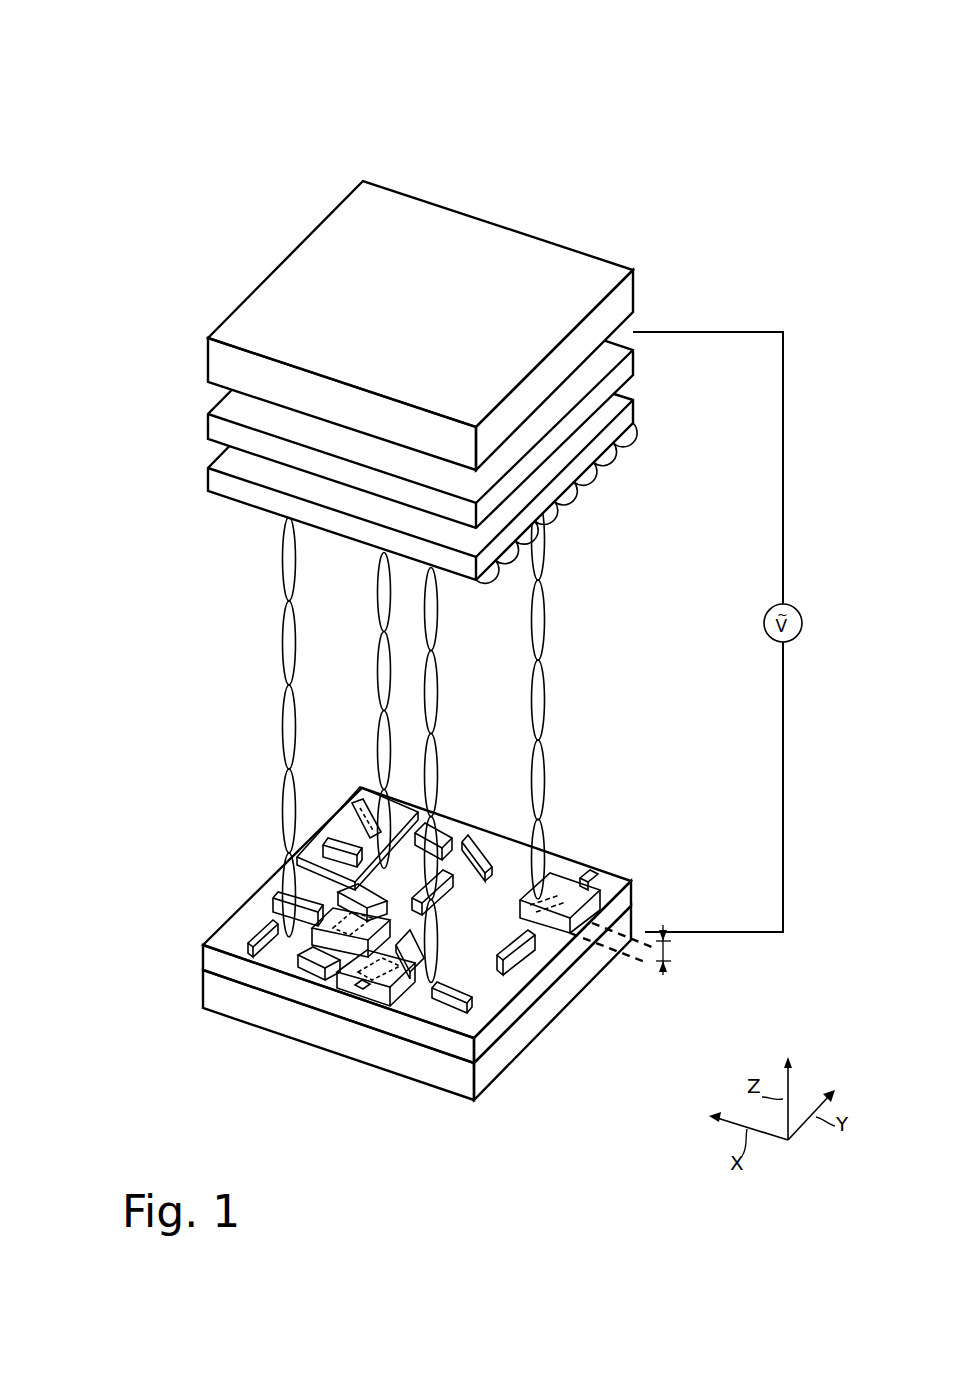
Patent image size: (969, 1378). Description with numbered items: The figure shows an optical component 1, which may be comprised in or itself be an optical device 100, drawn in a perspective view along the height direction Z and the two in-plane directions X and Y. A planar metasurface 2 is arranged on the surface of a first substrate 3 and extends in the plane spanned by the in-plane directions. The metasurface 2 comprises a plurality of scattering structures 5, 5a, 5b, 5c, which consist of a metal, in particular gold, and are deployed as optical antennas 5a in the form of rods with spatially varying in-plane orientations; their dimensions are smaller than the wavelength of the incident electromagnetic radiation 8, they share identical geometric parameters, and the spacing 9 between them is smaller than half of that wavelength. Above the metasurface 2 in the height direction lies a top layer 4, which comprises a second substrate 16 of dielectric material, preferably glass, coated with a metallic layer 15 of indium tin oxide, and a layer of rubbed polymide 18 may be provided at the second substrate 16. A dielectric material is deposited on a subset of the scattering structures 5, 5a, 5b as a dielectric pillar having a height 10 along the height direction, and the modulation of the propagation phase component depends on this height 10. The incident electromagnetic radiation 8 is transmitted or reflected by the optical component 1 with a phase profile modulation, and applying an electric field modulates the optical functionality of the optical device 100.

The optical device 100 is at (257, 46).
The optical component 1 is at (224, 218).
The top layer 4 is at (381, 382).
The incident electromagnetic radiation 8 is at (381, 338).
The metallic layer 15 is at (623, 300).
The second substrate 16 is at (623, 420).
The layer of rubbed polymide 18 is at (222, 483).
The spacing 9 is at (417, 944).
The metasurface 2 is at (518, 975).
The first substrate 3 is at (408, 998).
The scattering structures 5 is at (584, 902).
The optical antennas 5a is at (584, 902).
The scattering structure 5b is at (557, 890).
The scattering structure 5c is at (523, 953).
The height 10 is at (663, 988).